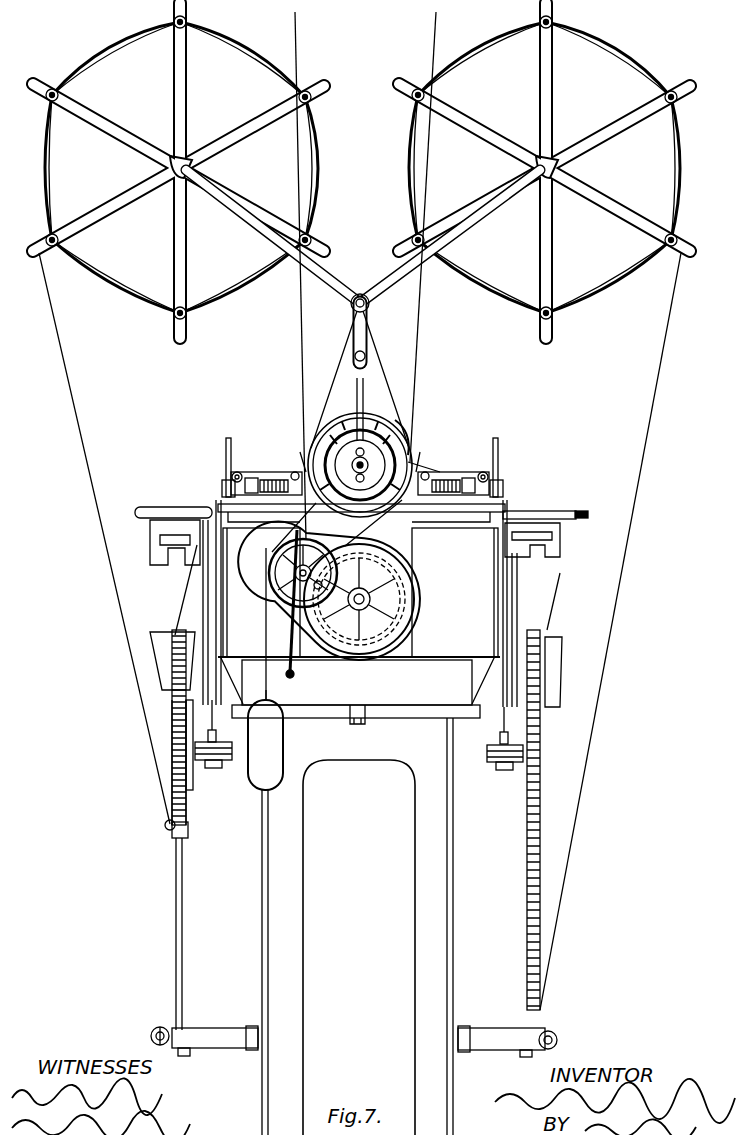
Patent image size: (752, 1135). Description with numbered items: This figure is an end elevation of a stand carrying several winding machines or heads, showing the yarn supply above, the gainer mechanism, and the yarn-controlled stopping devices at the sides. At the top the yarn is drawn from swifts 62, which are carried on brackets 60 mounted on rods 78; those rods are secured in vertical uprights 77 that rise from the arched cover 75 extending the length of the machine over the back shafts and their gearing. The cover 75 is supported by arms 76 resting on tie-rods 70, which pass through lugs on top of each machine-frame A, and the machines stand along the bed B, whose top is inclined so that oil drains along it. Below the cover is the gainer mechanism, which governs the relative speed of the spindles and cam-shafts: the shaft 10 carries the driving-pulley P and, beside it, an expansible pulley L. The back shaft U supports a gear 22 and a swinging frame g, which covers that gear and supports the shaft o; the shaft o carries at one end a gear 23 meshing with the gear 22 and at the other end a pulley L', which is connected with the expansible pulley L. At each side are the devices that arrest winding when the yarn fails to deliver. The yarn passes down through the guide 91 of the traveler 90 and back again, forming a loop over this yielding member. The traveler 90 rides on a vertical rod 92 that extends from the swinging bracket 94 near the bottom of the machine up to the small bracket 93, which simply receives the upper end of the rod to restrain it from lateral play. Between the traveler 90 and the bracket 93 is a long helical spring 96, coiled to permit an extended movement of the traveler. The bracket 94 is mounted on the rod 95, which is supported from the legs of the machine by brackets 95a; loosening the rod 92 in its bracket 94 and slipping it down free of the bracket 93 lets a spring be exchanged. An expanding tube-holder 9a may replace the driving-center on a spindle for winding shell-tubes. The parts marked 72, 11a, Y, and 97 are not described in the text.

The swifts 62 is at (188, 80).
The brackets 60 is at (233, 207).
The rods 78 is at (360, 294).
The vertical uprights 77 is at (371, 356).
The shaft 10 is at (358, 455).
The expansible pulley L is at (368, 412).
The driving-pulley P is at (400, 438).
The arched cover 75 is at (428, 441).
The arms 76 is at (300, 468).
The tie-rods 70 is at (298, 470).
The pin 72 is at (290, 475).
The expanding tube-holder 9a is at (575, 512).
The cross bar 11a is at (361, 519).
The pulley L' is at (287, 572).
The machine-frame A is at (212, 573).
The shaft o is at (285, 580).
The gear 23 is at (300, 600).
The swinging frame g is at (412, 580).
The gear 22 is at (404, 597).
The back shaft U is at (400, 612).
The bed B is at (357, 690).
The weight Y is at (265, 740).
The small bracket 93 is at (172, 714).
The tube 97 is at (193, 772).
The helical spring 96 is at (186, 800).
The guide 91 is at (166, 824).
The traveler 90 is at (188, 832).
The vertical rod 92 is at (182, 915).
The rod 95 is at (156, 1030).
The swinging bracket 94 is at (186, 1054).
The brackets 95a is at (486, 1042).